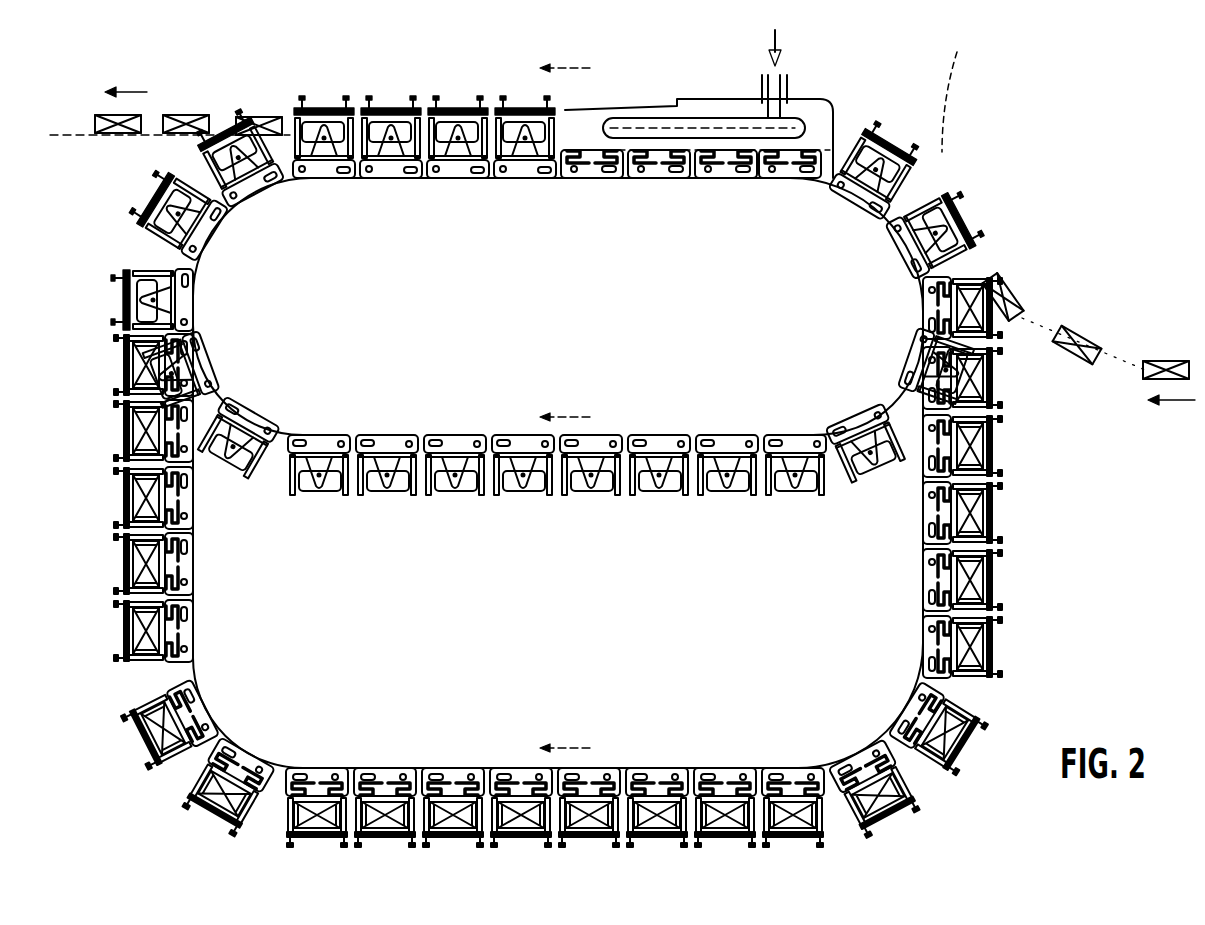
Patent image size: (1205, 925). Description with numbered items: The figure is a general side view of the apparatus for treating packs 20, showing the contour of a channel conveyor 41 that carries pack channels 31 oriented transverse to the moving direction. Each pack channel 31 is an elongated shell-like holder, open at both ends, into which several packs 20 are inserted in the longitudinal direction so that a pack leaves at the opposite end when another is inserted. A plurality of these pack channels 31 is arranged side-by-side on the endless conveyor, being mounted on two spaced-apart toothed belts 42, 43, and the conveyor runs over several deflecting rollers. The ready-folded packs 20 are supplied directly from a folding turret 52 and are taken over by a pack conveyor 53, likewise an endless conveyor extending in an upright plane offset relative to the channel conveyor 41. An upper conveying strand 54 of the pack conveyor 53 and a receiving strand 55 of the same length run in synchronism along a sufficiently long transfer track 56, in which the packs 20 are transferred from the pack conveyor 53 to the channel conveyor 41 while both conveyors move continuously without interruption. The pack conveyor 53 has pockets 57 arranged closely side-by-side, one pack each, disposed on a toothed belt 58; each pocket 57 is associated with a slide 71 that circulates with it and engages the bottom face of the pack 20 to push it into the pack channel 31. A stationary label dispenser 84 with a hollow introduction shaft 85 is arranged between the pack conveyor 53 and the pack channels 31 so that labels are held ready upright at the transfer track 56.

The pack 20 is at (186, 116).
The pack channel 31 is at (388, 808).
The channel conveyor 41 is at (1022, 600).
The toothed belt 42 is at (209, 387).
The toothed belt 43 is at (200, 668).
The folding turret 52 is at (941, 106).
The pack conveyor 53 is at (624, 503).
The upper conveying strand 54 is at (556, 194).
The receiving strand 55 is at (654, 64).
The transfer track 56 is at (424, 86).
The pocket 57 is at (765, 498).
The toothed belt 58 is at (290, 432).
The slide 71 is at (390, 498).
The label dispenser 84 is at (818, 99).
The introduction shaft 85 is at (779, 80).